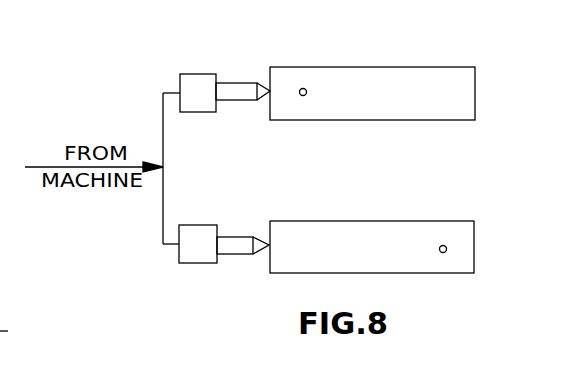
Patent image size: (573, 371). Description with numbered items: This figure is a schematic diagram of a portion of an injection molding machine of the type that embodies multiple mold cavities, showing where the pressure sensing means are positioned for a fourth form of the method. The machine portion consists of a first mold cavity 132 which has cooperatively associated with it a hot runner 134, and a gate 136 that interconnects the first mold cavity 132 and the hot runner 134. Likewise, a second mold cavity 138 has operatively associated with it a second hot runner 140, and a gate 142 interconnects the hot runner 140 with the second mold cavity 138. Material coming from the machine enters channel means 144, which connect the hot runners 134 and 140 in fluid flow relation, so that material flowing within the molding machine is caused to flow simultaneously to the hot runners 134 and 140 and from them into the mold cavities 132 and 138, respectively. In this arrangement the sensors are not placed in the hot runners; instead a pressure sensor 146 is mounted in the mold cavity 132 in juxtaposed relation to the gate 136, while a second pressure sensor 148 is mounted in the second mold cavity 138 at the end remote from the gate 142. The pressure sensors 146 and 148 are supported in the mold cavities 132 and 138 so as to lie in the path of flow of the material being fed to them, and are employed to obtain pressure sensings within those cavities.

The first mold cavity 132 is at (378, 99).
The hot runner 134 is at (205, 74).
The gate 136 is at (262, 83).
The second mold cavity 138 is at (328, 253).
The second hot runner 140 is at (203, 224).
The gate 142 is at (262, 237).
The channel means 144 is at (156, 206).
The pressure sensor 146 is at (304, 88).
The second pressure sensor 148 is at (443, 253).